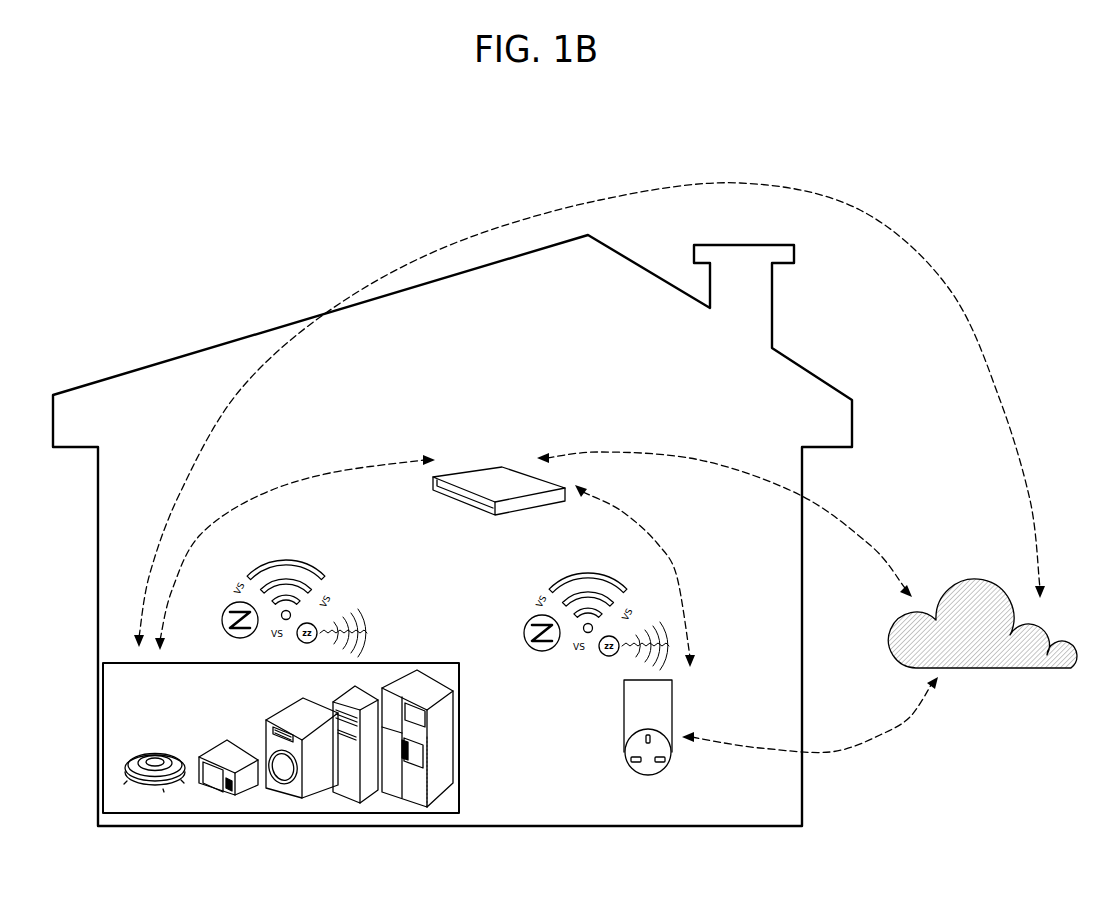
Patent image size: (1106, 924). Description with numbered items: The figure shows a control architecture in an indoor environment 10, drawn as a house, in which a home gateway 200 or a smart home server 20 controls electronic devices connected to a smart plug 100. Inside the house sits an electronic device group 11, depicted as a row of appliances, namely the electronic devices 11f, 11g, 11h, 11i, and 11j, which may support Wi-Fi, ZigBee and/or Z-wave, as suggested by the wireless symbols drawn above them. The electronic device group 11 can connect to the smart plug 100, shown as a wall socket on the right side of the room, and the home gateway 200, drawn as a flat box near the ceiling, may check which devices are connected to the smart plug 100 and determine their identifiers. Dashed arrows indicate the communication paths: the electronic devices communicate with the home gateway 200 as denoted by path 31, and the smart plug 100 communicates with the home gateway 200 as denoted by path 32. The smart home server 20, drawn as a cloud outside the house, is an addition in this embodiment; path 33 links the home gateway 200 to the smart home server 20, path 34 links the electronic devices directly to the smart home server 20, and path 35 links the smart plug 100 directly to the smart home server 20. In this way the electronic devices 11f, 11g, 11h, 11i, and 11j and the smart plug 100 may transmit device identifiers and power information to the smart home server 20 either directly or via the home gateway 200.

The indoor environment 10 is at (183, 355).
The electronic device group 11 is at (103, 737).
The electronic device 11f is at (155, 790).
The electronic device 11g is at (228, 797).
The electronic device 11h is at (297, 800).
The electronic device 11i is at (360, 804).
The electronic device 11j is at (427, 810).
The smart home server 20 is at (965, 580).
The Wi-Fi communication between electronic devices and home gateway 31 is at (395, 462).
The communication between smart plug and home gateway 32 is at (662, 552).
The communication path between hub and server 33 is at (680, 457).
The communication path between appliances and server 34 is at (760, 183).
The communication path between power tag and server 35 is at (855, 763).
The smart plug 100 is at (651, 770).
The home gateway 200 is at (467, 470).